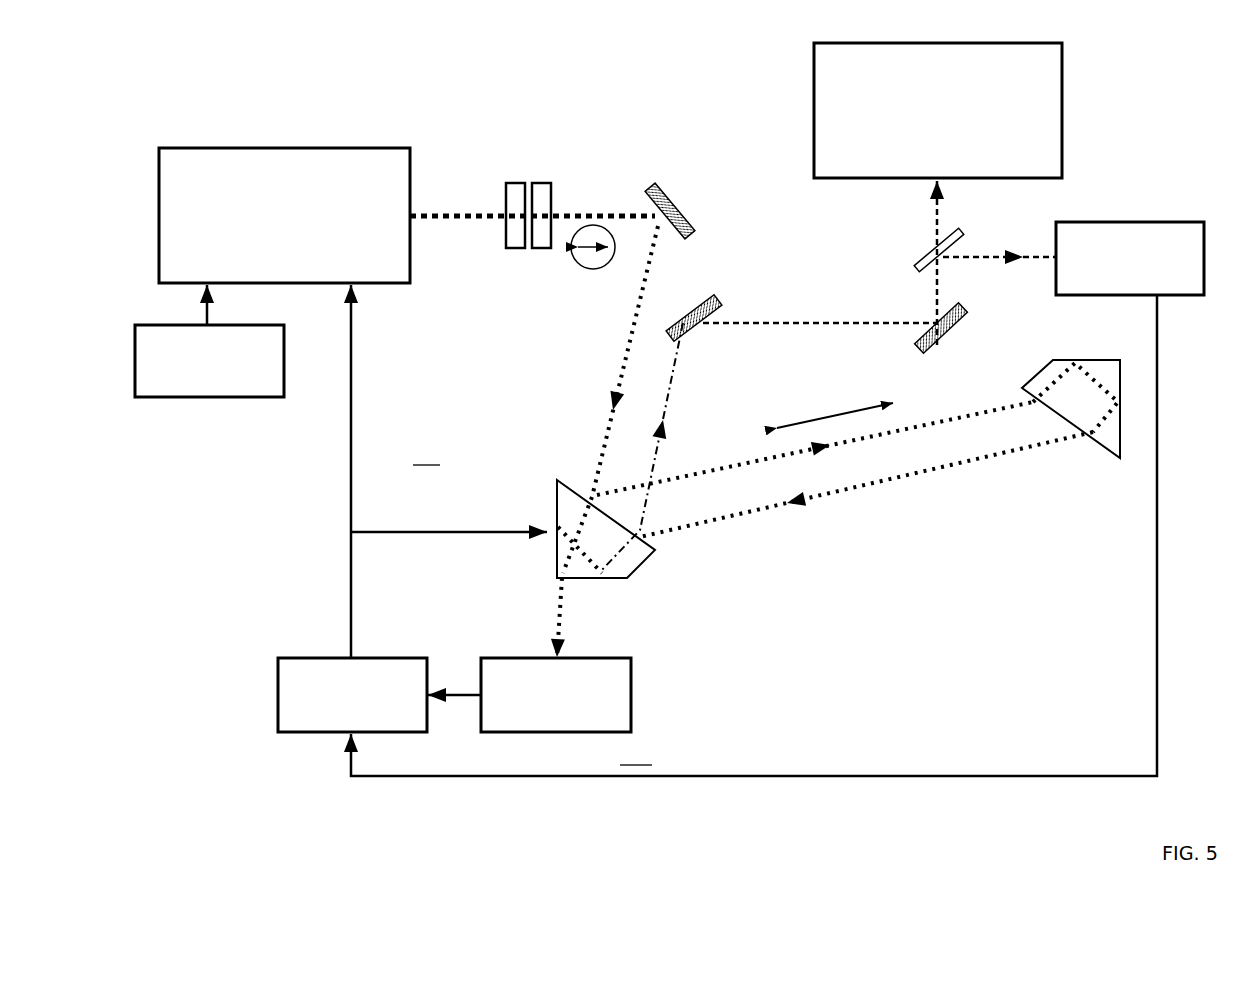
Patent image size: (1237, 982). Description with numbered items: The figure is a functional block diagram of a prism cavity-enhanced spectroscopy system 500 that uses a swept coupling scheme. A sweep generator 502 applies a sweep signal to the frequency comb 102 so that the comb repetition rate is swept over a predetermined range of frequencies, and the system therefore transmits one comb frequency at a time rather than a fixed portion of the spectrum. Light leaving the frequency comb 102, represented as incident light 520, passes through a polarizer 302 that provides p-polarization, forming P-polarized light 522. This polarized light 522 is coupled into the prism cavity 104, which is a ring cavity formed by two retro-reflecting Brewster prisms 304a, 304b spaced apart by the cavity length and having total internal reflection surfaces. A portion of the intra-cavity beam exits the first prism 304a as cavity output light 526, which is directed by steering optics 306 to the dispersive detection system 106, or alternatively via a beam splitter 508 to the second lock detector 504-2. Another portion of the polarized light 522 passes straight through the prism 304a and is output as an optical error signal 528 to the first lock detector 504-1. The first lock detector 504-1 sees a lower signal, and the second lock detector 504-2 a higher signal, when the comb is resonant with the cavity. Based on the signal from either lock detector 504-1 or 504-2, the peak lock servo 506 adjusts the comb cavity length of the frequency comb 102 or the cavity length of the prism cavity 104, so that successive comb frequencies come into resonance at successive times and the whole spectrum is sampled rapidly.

The spectroscopy system 500 is at (627, 41).
The frequency comb 102 is at (307, 277).
The sweep generator 502 is at (257, 397).
The incident light 520 is at (432, 213).
The polarizer 302 is at (537, 183).
The P-polarized light 522 is at (596, 213).
The steering optics 306 is at (923, 311).
The beam splitter 508 is at (918, 265).
The dispersive detection system 106 is at (1047, 162).
The second lock detector 504-2 is at (1127, 220).
The retro-reflecting Brewster prism 304a is at (552, 502).
The retro-reflecting Brewster prism 304b is at (1022, 388).
The prism cavity 104 is at (983, 508).
The cavity output light 526 is at (675, 392).
The optical error signal 528 is at (557, 602).
The first lock detector 504-1 is at (600, 658).
The peak lock servo 506 is at (367, 658).